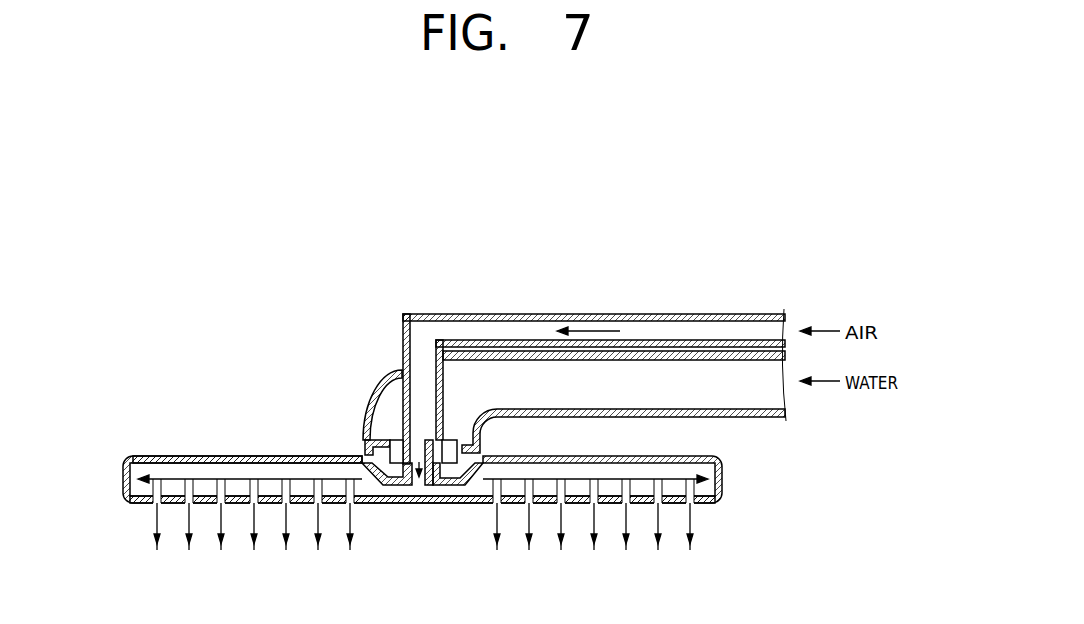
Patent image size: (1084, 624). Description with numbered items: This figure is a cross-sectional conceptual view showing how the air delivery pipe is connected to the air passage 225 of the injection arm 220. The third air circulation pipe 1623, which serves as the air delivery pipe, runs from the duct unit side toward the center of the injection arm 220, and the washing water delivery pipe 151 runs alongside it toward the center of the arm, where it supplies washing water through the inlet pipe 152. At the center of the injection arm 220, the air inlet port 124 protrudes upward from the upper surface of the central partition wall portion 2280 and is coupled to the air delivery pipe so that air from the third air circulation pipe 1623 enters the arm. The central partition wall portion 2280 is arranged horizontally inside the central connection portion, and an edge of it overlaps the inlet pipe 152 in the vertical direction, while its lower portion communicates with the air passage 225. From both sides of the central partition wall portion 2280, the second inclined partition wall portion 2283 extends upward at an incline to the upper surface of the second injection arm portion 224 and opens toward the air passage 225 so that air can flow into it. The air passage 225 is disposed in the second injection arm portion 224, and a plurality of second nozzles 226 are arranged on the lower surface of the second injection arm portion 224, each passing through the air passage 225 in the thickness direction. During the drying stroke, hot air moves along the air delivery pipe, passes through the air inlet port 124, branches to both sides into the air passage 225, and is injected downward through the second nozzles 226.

The third air circulation pipe 1623 is at (556, 313).
The washing water delivery pipe 151 is at (652, 347).
The air inlet port 124 is at (412, 418).
The inlet pipe 152 is at (395, 437).
The injection arm 220 is at (413, 469).
The second injection arm portion 224 is at (173, 456).
The air passage 225 is at (420, 455).
The second nozzle 226 is at (153, 505).
The second inclined partition wall portion 2283 is at (366, 486).
The central partition wall portion 2280 is at (403, 486).